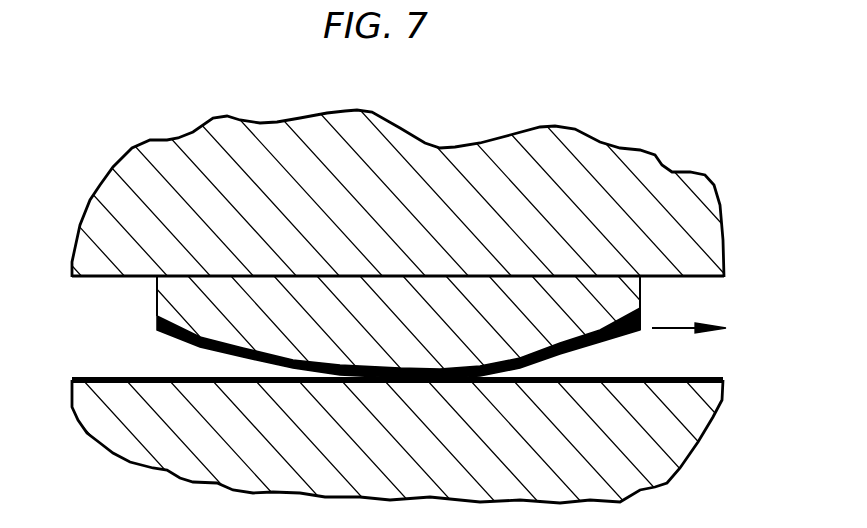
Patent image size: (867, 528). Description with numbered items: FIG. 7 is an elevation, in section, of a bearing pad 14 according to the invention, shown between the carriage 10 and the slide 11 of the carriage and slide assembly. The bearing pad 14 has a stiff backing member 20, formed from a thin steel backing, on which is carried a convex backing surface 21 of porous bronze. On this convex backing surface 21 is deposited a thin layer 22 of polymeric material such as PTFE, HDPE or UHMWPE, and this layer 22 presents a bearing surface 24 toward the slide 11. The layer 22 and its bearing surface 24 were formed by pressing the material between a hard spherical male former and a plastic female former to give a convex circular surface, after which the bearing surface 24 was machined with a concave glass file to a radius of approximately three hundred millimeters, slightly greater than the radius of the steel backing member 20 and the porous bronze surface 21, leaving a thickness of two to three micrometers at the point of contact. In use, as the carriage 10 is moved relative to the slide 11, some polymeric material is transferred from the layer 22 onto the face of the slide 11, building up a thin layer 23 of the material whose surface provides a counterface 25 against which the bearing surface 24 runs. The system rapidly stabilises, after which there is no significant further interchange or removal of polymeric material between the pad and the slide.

The carriage 10 is at (455, 152).
The slide 11 is at (120, 440).
The bearing pad 14 is at (457, 274).
The backing member 20 is at (540, 285).
The convex backing surface 21 is at (157, 330).
The layer 22 is at (608, 322).
The thin layer 23 is at (82, 377).
The bearing surface 24 is at (596, 348).
The counterface 25 is at (712, 380).